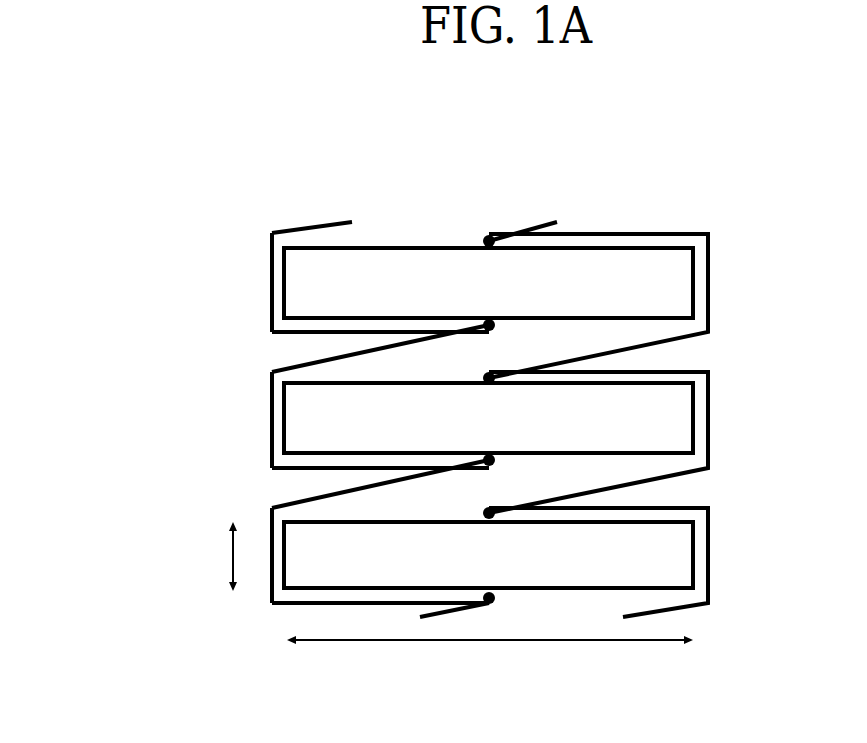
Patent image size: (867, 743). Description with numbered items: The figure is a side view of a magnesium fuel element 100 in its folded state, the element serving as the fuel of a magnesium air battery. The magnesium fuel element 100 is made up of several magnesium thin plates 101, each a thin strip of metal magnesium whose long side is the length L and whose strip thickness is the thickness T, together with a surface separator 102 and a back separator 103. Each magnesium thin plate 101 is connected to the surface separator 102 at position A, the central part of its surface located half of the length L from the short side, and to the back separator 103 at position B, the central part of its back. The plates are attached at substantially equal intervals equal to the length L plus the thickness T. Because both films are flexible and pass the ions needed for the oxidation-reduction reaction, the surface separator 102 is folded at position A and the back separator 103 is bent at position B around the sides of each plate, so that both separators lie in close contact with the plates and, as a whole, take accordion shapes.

The magnesium fuel element 100 is at (252, 112).
The magnesium thin plate 101 is at (421, 248).
The surface separator 102 is at (625, 233).
The back separator 103 is at (270, 280).
The position A is at (490, 378).
The position B is at (489, 460).
The thickness T is at (210, 556).
The long side L is at (490, 665).